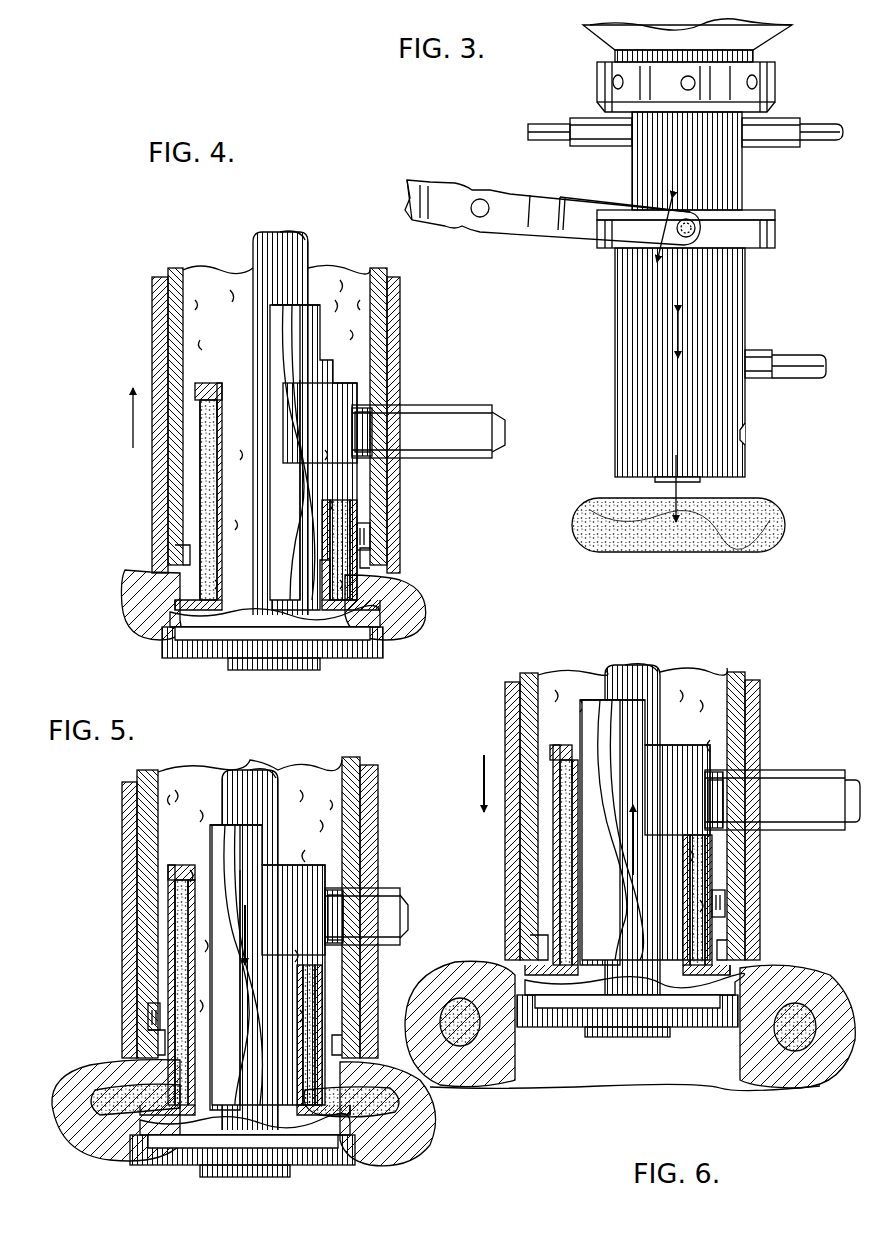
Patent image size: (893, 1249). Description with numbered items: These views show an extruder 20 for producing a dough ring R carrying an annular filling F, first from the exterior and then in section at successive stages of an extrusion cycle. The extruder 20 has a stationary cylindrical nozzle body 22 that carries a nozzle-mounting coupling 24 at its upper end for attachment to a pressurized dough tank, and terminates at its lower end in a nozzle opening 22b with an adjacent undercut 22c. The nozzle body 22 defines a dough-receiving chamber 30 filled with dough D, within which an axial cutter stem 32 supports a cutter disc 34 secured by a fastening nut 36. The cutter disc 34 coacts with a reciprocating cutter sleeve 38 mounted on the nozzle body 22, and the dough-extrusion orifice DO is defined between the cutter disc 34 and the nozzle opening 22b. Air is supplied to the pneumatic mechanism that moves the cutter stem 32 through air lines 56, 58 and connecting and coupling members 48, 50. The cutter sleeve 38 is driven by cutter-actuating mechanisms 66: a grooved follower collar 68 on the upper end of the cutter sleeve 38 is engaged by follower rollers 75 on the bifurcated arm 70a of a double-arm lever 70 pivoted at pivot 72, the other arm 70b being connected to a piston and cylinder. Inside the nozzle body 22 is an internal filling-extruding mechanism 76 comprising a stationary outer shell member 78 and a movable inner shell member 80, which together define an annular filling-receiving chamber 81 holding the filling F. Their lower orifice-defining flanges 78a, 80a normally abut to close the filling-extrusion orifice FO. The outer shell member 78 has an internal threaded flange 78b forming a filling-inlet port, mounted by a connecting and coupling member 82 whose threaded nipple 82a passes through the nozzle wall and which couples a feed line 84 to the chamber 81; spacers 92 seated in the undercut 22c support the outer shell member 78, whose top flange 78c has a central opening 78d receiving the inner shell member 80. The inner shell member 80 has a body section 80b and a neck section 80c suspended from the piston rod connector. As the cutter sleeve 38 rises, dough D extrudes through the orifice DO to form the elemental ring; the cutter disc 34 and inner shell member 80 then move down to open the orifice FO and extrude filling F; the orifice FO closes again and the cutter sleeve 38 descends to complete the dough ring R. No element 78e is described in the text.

In FIG. 3, the extruder 20 is at (606, 293).
In FIG. 3, the nozzle body 22 is at (742, 183).
In FIG. 4, the nozzle body 22 is at (282, 400).
In FIG. 5, the nozzle body 22 is at (220, 897).
In FIG. 6, the nozzle body 22 is at (606, 799).
In FIG. 4, the nozzle opening 22b is at (393, 568).
In FIG. 5, the nozzle opening 22b is at (140, 1055).
In FIG. 6, the nozzle opening 22b is at (525, 955).
In FIG. 4, the undercut 22c is at (175, 548).
In FIG. 5, the undercut 22c is at (150, 1035).
In FIG. 6, the undercut 22c is at (532, 935).
In FIG. 3, the nozzle-mounting coupling 24 is at (597, 74).
In FIG. 4, the dough-receiving chamber 30 is at (390, 322).
In FIG. 5, the dough-receiving chamber 30 is at (348, 815).
In FIG. 6, the dough-receiving chamber 30 is at (720, 690).
In FIG. 4, the cutter stem 32 is at (275, 240).
In FIG. 5, the cutter stem 32 is at (272, 772).
In FIG. 6, the cutter stem 32 is at (640, 665).
In FIG. 4, the cutter disc 34 is at (205, 648).
In FIG. 5, the cutter disc 34 is at (195, 1165).
In FIG. 6, the cutter disc 34 is at (700, 1028).
In FIG. 4, the fastening nut 36 is at (275, 670).
In FIG. 5, the fastening nut 36 is at (245, 1177).
In FIG. 6, the fastening nut 36 is at (640, 1038).
In FIG. 3, the cutter sleeve 38 is at (632, 388).
In FIG. 4, the cutter sleeve 38 is at (152, 287).
In FIG. 5, the cutter sleeve 38 is at (122, 792).
In FIG. 6, the cutter sleeve 38 is at (505, 688).
In FIG. 3, the connecting and coupling member 48 is at (598, 146).
In FIG. 3, the connecting and coupling member 50 is at (790, 140).
In FIG. 3, the air line 56 is at (538, 124).
In FIG. 3, the air line 58 is at (824, 124).
In FIG. 3, the cutter-actuating mechanisms 66 is at (550, 208).
In FIG. 3, the follower collar 68 is at (775, 240).
In FIG. 3, the double-arm lever 70 is at (433, 226).
In FIG. 3, the arm 70a is at (557, 235).
In FIG. 3, the arm 70b is at (420, 192).
In FIG. 3, the pivot 72 is at (480, 215).
In FIG. 3, the follower rollers 75 is at (665, 258).
In FIG. 4, the internal filling-extruding mechanism 76 is at (352, 380).
In FIG. 5, the internal filling-extruding mechanism 76 is at (330, 872).
In FIG. 6, the internal filling-extruding mechanism 76 is at (710, 745).
In FIG. 4, the outer shell member 78 is at (260, 471).
In FIG. 5, the outer shell member 78 is at (244, 972).
In FIG. 6, the outer shell member 78 is at (633, 848).
In FIG. 4, the orifice-defining flange 78a is at (185, 605).
In FIG. 6, the orifice-defining flange 78a is at (725, 968).
In FIG. 4, the internal threaded flange 78b is at (362, 432).
In FIG. 5, the internal threaded flange 78b is at (335, 915).
In FIG. 6, the internal threaded flange 78b is at (715, 790).
In FIG. 4, the top flange 78c is at (220, 383).
In FIG. 5, the top flange 78c is at (178, 865).
In FIG. 6, the top flange 78c is at (562, 748).
In FIG. 4, the central opening 78d is at (222, 400).
In FIG. 5, the central opening 78d is at (192, 882).
In FIG. 6, the central opening 78d is at (578, 770).
In FIG. 5, the sleeve lower lip 78e is at (335, 1090).
In FIG. 4, the inner shell member 80 is at (275, 482).
In FIG. 5, the inner shell member 80 is at (271, 1001).
In FIG. 6, the inner shell member 80 is at (654, 858).
In FIG. 4, the orifice-defining flange 80a is at (172, 622).
In FIG. 5, the orifice-defining flange 80a is at (320, 1136).
In FIG. 6, the orifice-defining flange 80a is at (555, 985).
In FIG. 4, the body section 80b is at (225, 535).
In FIG. 5, the body section 80b is at (205, 1040).
In FIG. 4, the neck section 80c is at (248, 320).
In FIG. 5, the neck section 80c is at (212, 832).
In FIG. 6, the neck section 80c is at (590, 700).
In FIG. 4, the filling-receiving chamber 81 is at (205, 455).
In FIG. 5, the filling-receiving chamber 81 is at (175, 905).
In FIG. 6, the filling-receiving chamber 81 is at (560, 828).
In FIG. 3, the connecting and coupling member 82 is at (765, 353).
In FIG. 4, the connecting and coupling member 82 is at (428, 434).
In FIG. 5, the connecting and coupling member 82 is at (386, 902).
In FIG. 6, the connecting and coupling member 82 is at (775, 783).
In FIG. 4, the threaded nipple 82a is at (372, 412).
In FIG. 5, the threaded nipple 82a is at (345, 895).
In FIG. 6, the threaded nipple 82a is at (730, 778).
In FIG. 3, the feed line 84 is at (808, 362).
In FIG. 6, the feed line 84 is at (855, 825).
In FIG. 4, the spacers 92 is at (366, 535).
In FIG. 5, the spacers 92 is at (150, 1012).
In FIG. 6, the spacers 92 is at (725, 905).
In FIG. 4, the dough D is at (328, 275).
In FIG. 5, the dough D is at (322, 768).
In FIG. 6, the dough D is at (705, 680).
In FIG. 4, the dough-extrusion orifice DO is at (150, 575).
In FIG. 5, the dough-extrusion orifice DO is at (100, 1070).
In FIG. 6, the dough-extrusion orifice DO is at (505, 968).
In FIG. 4, the filling F is at (210, 500).
In FIG. 5, the filling F is at (180, 955).
In FIG. 6, the filling F is at (560, 872).
In FIG. 5, the filling-extrusion orifice FO is at (130, 1118).
In FIG. 3, the dough ring R is at (780, 520).